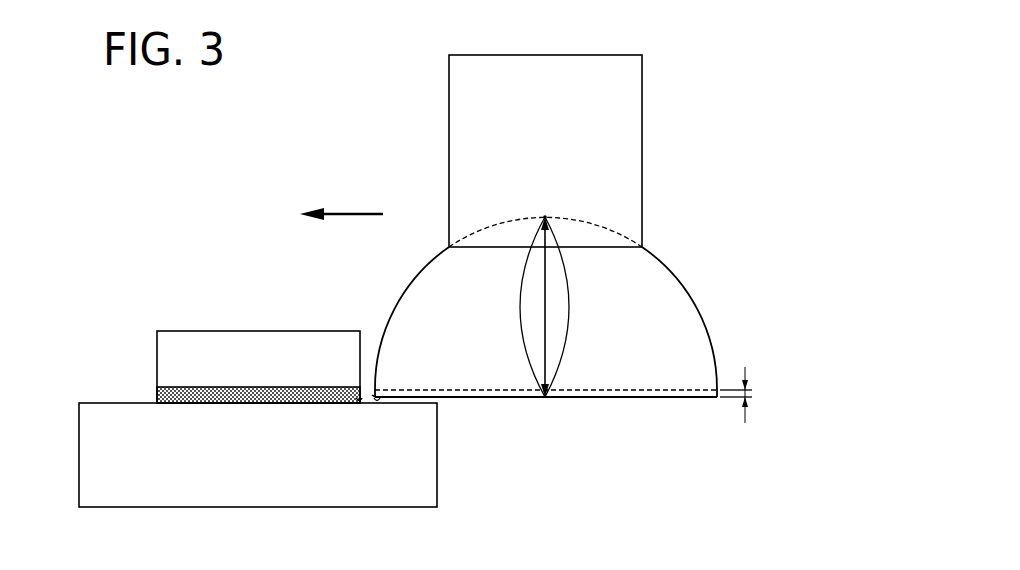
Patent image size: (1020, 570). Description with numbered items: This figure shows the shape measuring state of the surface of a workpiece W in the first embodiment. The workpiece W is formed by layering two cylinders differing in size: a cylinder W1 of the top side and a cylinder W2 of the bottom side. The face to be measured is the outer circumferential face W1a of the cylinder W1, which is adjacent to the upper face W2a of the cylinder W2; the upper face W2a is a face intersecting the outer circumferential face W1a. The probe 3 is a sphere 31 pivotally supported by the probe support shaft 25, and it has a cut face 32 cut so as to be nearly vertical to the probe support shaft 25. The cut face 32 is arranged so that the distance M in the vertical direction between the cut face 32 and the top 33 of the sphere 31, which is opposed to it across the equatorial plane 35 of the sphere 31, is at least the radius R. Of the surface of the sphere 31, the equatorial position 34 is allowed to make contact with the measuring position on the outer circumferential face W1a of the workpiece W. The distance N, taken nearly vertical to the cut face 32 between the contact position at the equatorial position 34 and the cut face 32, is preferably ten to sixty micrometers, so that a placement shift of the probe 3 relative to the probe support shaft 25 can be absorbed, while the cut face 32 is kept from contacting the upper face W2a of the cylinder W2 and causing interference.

The probe 3 is at (565, 319).
The probe support shaft 25 is at (638, 158).
The sphere 31 is at (710, 332).
The cut face 32 is at (675, 398).
The top of the sphere 33 is at (545, 217).
The equatorial position 34 is at (373, 397).
The equatorial plane 35 is at (612, 392).
The radius R is at (527, 307).
The distance M is at (562, 307).
The distance N is at (744, 398).
The workpiece W is at (286, 413).
The cylinder of the top side W1 is at (208, 338).
The cylinder of the bottom side W2 is at (423, 448).
The outer circumferential face W1a is at (361, 403).
The upper face W2a is at (377, 403).